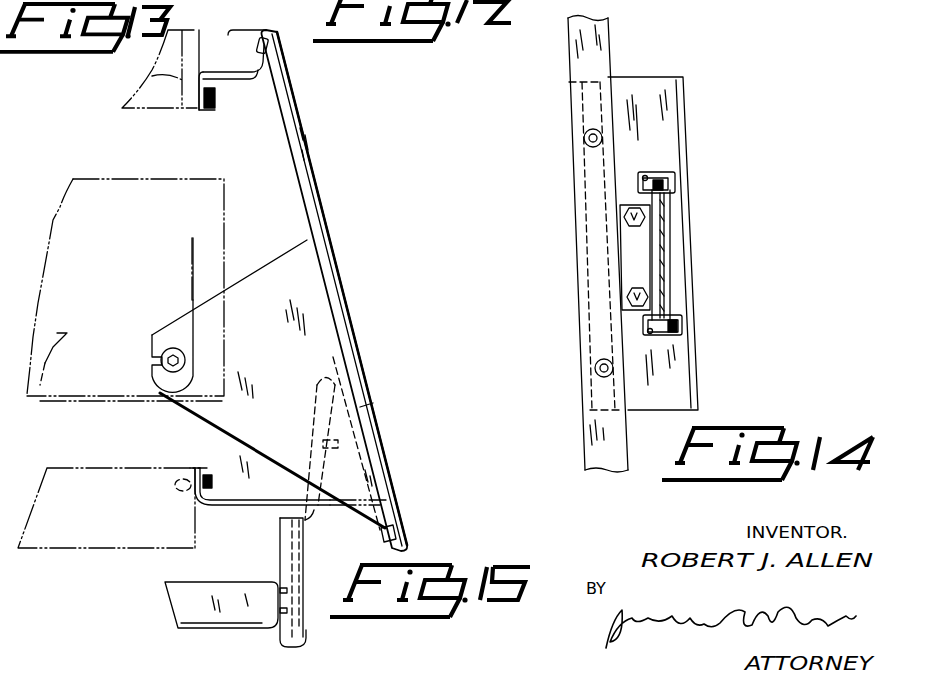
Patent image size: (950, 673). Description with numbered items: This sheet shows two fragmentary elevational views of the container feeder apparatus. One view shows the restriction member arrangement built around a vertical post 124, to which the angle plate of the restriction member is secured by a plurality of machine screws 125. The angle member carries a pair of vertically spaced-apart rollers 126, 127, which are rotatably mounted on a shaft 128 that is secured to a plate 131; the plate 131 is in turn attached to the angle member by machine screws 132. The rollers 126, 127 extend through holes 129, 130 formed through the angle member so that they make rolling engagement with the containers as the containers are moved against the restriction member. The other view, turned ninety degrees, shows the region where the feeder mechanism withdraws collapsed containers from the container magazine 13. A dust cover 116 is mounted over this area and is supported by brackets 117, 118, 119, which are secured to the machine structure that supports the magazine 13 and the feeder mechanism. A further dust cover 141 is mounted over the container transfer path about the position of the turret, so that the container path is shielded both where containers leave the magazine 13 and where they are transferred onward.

In FIG. 15, the container magazine 13 is at (165, 146).
In FIG. 15, the dust cover 116 is at (313, 178).
In FIG. 15, the bracket 117 is at (242, 506).
In FIG. 15, the bracket 118 is at (248, 72).
In FIG. 15, the bracket 119 is at (273, 277).
In FIG. 15, the dust cover 141 is at (300, 641).
In FIG. 14, the vertical post 124 is at (571, 43).
In FIG. 14, the machine screws 125 is at (584, 139).
In FIG. 14, the roller 126 is at (667, 184).
In FIG. 14, the roller 127 is at (680, 325).
In FIG. 14, the shaft 128 is at (665, 262).
In FIG. 14, the hole 129 is at (646, 175).
In FIG. 14, the hole 130 is at (651, 335).
In FIG. 14, the plate 131 is at (632, 258).
In FIG. 14, the machine screws 132 is at (645, 218).